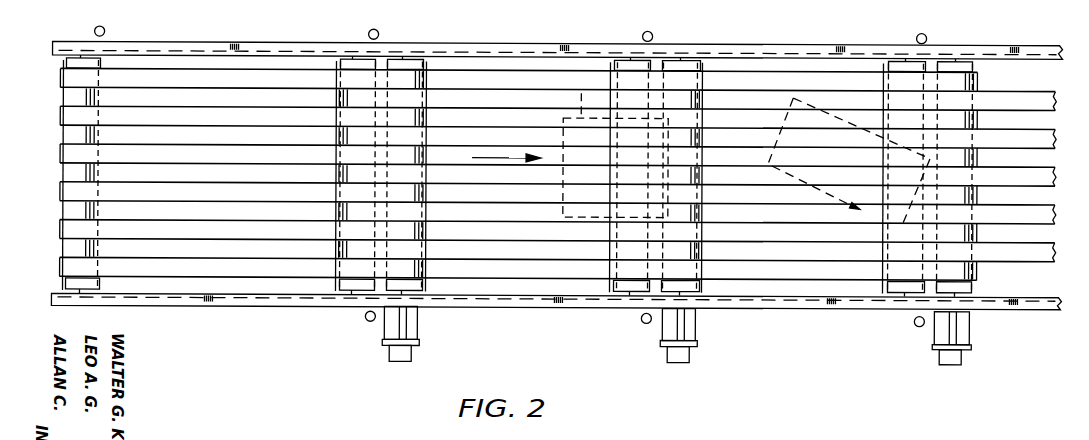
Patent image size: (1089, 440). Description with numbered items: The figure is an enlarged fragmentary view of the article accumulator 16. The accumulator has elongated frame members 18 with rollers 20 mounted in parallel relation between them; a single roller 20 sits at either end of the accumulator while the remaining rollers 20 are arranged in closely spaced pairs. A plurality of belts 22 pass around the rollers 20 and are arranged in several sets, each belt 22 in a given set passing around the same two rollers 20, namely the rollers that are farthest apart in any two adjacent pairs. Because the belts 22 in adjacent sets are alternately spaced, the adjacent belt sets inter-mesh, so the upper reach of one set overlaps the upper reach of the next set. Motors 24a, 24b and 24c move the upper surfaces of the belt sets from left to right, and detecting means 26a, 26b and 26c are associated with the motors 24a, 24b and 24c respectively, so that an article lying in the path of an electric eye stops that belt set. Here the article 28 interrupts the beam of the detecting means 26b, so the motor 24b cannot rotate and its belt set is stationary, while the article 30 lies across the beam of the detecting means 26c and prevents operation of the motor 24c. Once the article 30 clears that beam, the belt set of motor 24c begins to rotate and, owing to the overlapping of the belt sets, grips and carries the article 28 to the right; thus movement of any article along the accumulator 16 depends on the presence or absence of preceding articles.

The accumulator 16 is at (226, 329).
The frame members 18 is at (497, 48).
The rollers 20 is at (62, 134).
The belts 22 is at (224, 148).
The motor 24a is at (418, 327).
The motor 24b is at (697, 328).
The motor 24c is at (970, 332).
The detecting means 26a is at (378, 31).
The detecting means 26b is at (647, 31).
The detecting means 26c is at (927, 35).
The article 28 is at (580, 92).
The article 30 is at (828, 112).